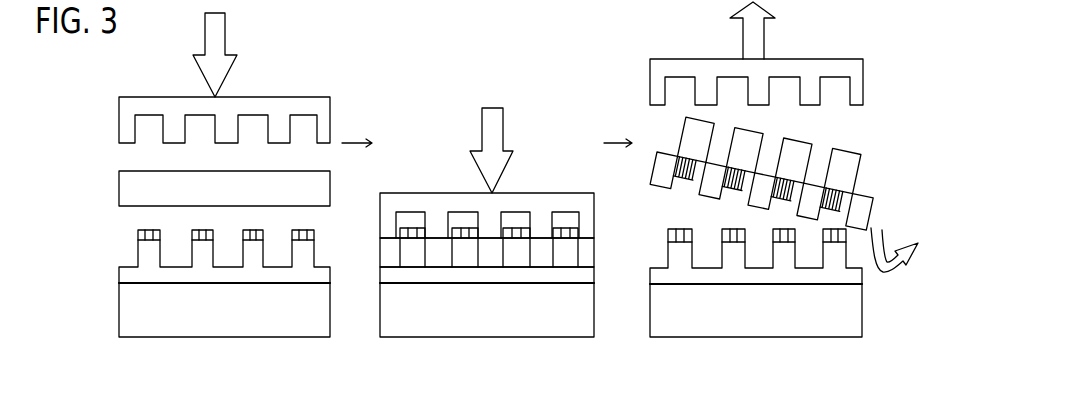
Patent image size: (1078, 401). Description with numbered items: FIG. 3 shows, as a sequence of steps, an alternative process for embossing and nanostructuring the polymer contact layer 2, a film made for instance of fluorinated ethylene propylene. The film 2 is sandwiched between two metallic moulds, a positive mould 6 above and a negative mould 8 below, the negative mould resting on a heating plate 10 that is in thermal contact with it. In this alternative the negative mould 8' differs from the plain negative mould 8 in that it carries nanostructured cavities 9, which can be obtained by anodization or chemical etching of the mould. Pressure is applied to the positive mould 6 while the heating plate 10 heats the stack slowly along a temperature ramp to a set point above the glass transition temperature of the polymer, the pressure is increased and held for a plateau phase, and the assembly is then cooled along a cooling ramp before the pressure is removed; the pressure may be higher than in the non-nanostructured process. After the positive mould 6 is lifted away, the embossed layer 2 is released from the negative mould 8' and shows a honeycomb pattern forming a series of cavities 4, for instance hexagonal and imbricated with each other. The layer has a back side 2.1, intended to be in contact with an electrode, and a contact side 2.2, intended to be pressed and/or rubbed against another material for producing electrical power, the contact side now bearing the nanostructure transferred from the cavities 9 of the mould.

The contact layer 2 is at (119, 201).
The back side of the layer 2.1 is at (846, 143).
The contact side of the layer 2.2 is at (843, 233).
The cavities 4 is at (681, 180).
The positive mould 6 is at (119, 128).
The negative mould 8 is at (590, 305).
The negative mould with nanostructured cavities 8' is at (203, 280).
The nanostructured cavities 9 is at (199, 229).
The heating plate 10 is at (167, 337).